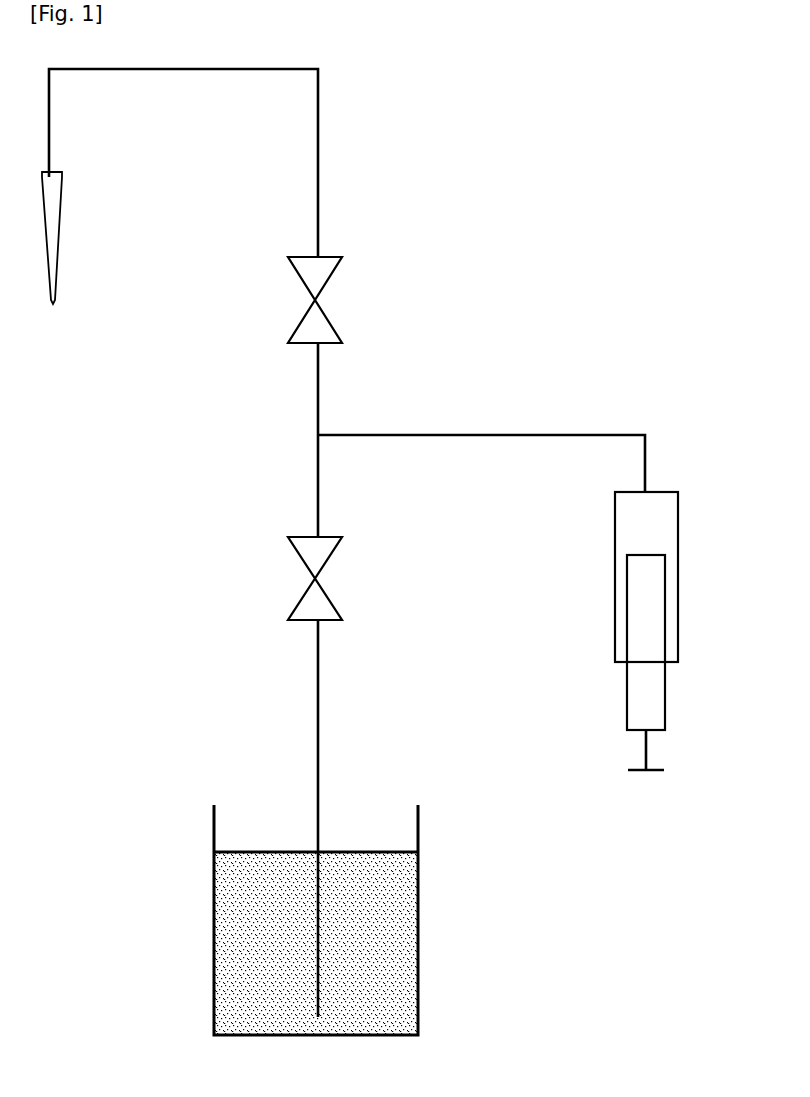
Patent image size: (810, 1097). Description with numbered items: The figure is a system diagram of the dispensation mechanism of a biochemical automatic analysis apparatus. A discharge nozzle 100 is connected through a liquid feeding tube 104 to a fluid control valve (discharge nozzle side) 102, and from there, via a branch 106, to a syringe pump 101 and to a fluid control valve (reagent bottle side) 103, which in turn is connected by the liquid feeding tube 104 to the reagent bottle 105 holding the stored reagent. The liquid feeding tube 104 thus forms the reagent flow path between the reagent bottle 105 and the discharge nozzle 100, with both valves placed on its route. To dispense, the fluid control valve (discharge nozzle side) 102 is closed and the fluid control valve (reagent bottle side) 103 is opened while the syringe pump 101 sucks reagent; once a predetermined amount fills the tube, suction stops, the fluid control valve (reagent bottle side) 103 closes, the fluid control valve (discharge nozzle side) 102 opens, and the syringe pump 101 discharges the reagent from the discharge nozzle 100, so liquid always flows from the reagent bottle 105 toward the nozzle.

The discharge nozzle 100 is at (57, 222).
The syringe pump 101 is at (680, 588).
The fluid control valve (discharge nozzle side) 102 is at (330, 318).
The fluid control valve (reagent bottle side) 103 is at (326, 587).
The liquid feeding tube 104 is at (323, 141).
The reagent bottle 105 is at (420, 903).
The branch 106 is at (325, 424).